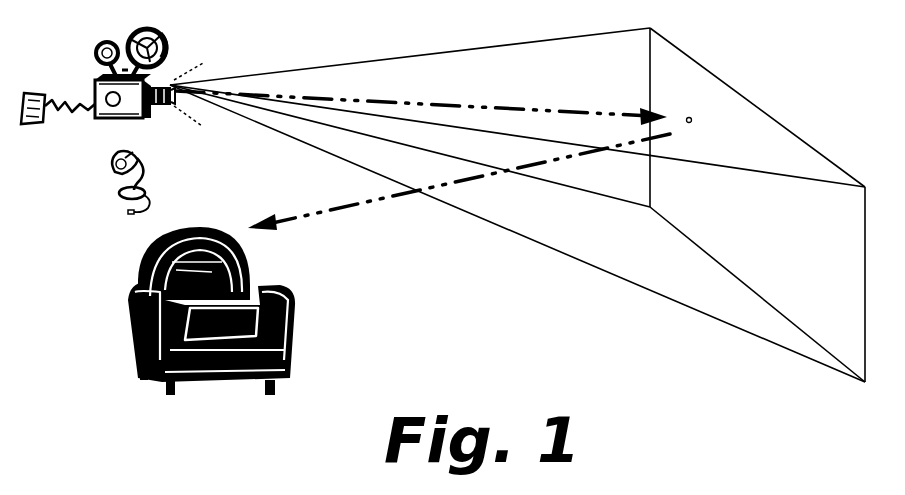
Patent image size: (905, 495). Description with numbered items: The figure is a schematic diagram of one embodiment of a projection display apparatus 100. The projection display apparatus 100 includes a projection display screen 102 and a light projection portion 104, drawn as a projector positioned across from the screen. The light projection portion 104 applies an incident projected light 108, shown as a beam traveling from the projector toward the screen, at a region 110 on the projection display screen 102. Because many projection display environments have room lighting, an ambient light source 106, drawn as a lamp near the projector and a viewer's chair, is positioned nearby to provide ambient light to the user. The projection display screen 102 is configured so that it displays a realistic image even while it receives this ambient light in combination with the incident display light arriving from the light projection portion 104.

The projection display apparatus 100 is at (800, 50).
The projection display screen 102 is at (778, 122).
The light projection portion 104 is at (180, 74).
The ambient light source 106 is at (148, 157).
The incident projected light 108 is at (402, 95).
The region 110 is at (691, 123).